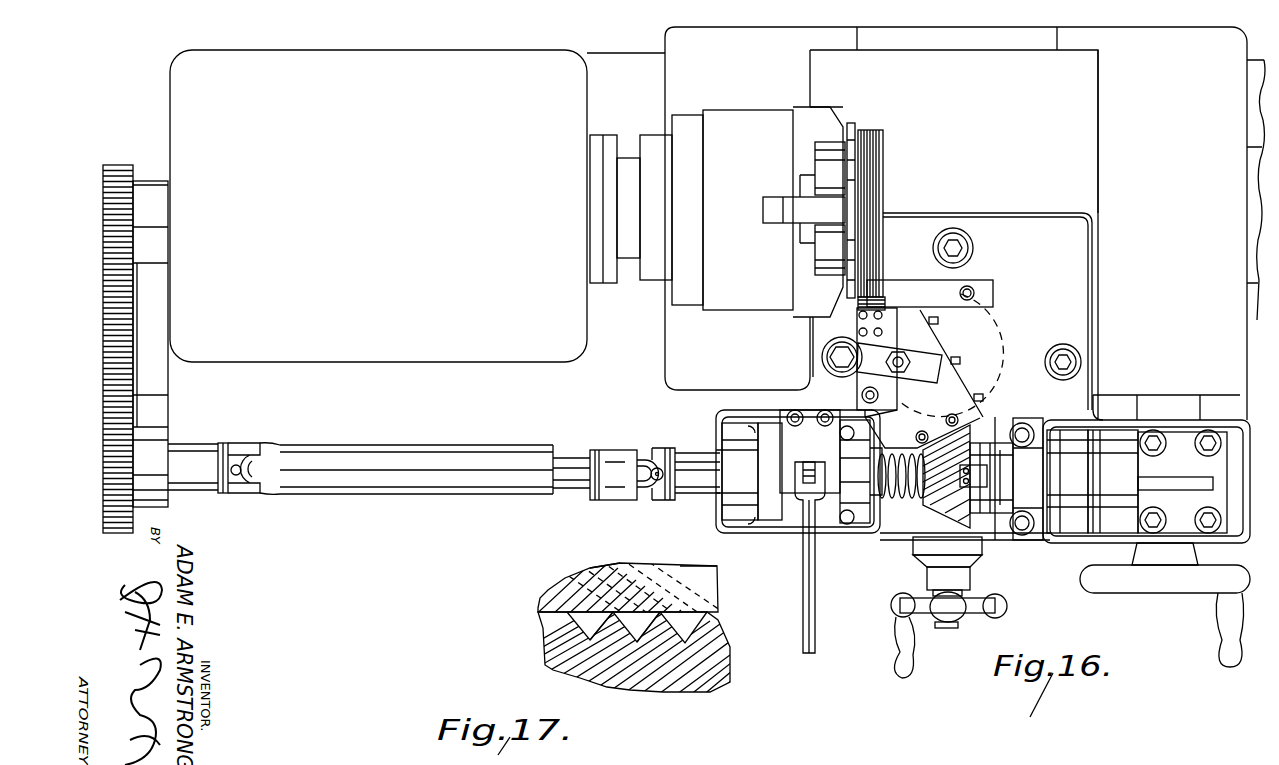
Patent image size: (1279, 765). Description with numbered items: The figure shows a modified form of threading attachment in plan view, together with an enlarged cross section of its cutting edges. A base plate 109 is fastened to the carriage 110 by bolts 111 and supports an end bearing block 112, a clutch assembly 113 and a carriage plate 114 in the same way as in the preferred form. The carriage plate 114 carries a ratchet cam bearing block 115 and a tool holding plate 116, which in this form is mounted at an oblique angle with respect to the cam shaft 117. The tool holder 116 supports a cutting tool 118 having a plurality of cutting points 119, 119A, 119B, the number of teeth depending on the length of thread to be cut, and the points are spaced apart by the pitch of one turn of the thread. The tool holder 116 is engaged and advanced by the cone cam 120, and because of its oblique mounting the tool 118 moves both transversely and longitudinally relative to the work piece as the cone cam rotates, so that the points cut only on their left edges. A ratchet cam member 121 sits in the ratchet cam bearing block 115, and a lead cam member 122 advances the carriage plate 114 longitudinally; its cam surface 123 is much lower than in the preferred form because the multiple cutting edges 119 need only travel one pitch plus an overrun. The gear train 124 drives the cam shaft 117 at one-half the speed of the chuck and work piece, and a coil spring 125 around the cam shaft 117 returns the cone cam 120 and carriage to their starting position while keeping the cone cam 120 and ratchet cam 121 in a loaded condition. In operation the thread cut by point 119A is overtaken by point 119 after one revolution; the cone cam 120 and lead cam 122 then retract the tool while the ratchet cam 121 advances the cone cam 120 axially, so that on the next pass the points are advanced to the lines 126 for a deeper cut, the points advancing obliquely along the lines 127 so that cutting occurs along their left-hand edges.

In FIG. 16, the base plate 109 is at (1088, 284).
In FIG. 16, the carriage 110 is at (1093, 178).
In FIG. 16, the bolts 111 is at (968, 247).
In FIG. 16, the end bearing block 112 is at (1215, 436).
In FIG. 16, the clutch assembly 113 is at (733, 443).
In FIG. 16, the carriage plate 114 is at (982, 418).
In FIG. 16, the ratchet cam bearing block 115 is at (1012, 535).
In FIG. 16, the tool holding plate 116 is at (958, 374).
In FIG. 16, the cam shaft 117 is at (889, 499).
In FIG. 16, the cutting tool 118 is at (858, 300).
In FIG. 17, the cutting tool 118 is at (548, 645).
In FIG. 17, the cutting point 119 is at (720, 628).
In FIG. 17, the cutting point 119A is at (660, 614).
In FIG. 17, the cutting point 119B is at (612, 628).
In FIG. 16, the cone cam 120 is at (933, 512).
In FIG. 16, the ratchet cam member 121 is at (988, 515).
In FIG. 16, the lead cam member 122 is at (1070, 533).
In FIG. 16, the cam surface 123 is at (1046, 426).
In FIG. 16, the gear train 124 is at (135, 312).
In FIG. 16, the coil spring 125 is at (887, 500).
In FIG. 17, the lines 126 is at (620, 572).
In FIG. 17, the lines 127 is at (704, 576).